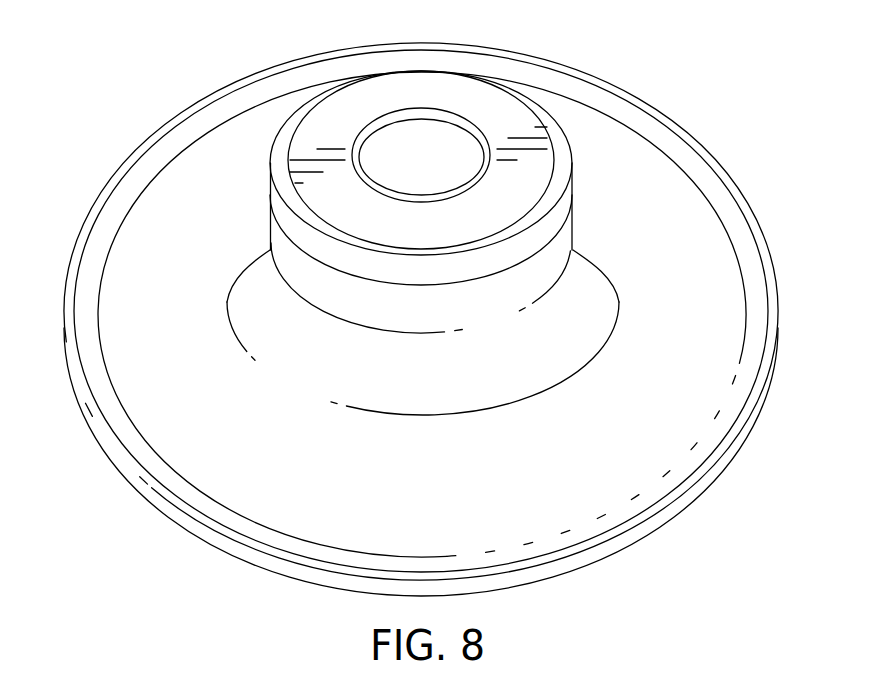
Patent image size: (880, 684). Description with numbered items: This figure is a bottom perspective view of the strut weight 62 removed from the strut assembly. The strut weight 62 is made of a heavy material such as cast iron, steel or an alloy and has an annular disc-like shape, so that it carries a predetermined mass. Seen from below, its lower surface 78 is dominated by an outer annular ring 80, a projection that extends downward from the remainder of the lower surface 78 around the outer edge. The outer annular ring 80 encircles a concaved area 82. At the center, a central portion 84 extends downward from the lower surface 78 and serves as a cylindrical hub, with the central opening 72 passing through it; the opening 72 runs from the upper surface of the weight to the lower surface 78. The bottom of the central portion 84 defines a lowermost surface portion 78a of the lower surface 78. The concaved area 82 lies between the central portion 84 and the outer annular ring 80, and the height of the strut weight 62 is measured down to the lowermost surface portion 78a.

The strut weight 62 is at (730, 95).
The central opening 72 is at (393, 150).
The lower surface 78 is at (140, 297).
The lowermost surface portion 78a is at (502, 115).
The outer annular ring 80 is at (768, 238).
The concaved area 82 is at (698, 332).
The central portion 84 is at (277, 235).